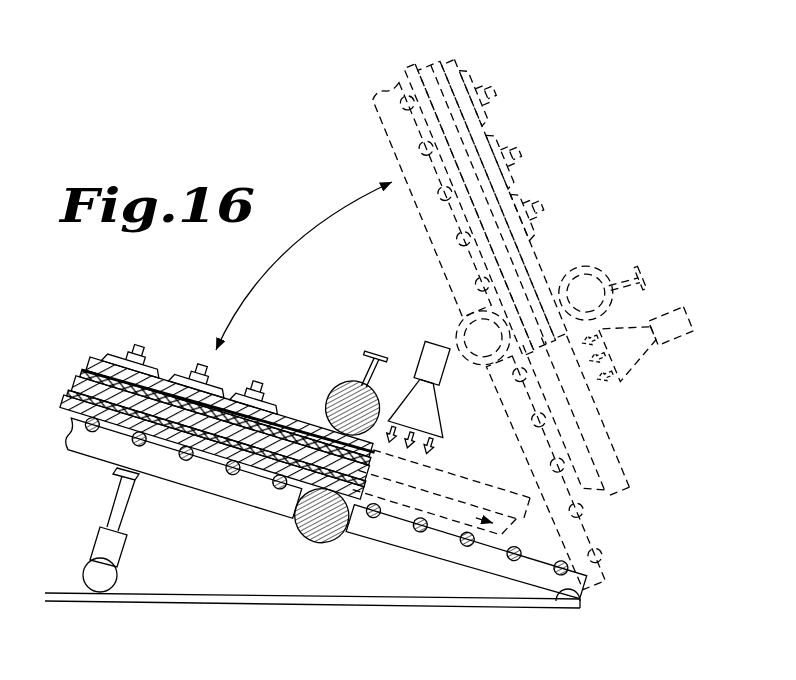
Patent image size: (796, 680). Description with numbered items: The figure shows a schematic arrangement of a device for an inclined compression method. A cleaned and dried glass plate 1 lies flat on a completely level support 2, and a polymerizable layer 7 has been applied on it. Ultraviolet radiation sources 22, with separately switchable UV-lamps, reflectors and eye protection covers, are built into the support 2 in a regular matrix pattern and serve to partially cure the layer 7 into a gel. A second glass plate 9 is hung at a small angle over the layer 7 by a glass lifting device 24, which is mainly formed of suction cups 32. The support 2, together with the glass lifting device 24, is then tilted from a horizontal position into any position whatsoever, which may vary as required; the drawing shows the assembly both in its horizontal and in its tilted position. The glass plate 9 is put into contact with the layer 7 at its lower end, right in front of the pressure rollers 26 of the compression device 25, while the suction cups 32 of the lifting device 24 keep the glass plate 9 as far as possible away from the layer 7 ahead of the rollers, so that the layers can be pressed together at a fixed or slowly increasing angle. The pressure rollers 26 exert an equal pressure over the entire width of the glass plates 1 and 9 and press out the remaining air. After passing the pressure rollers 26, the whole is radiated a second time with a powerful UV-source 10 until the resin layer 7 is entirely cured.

The glass plate 1 is at (76, 400).
The support 2 is at (86, 447).
The polymerizable layer 7 is at (84, 382).
The second glass plate 9 is at (92, 360).
The radiation device 10 is at (414, 340).
The ultraviolet radiation sources 22 is at (427, 412).
The glass lifting device 24 is at (172, 348).
The compression device 25 is at (318, 556).
The pressure rollers 26 is at (340, 396).
The suction cups 32 is at (238, 382).